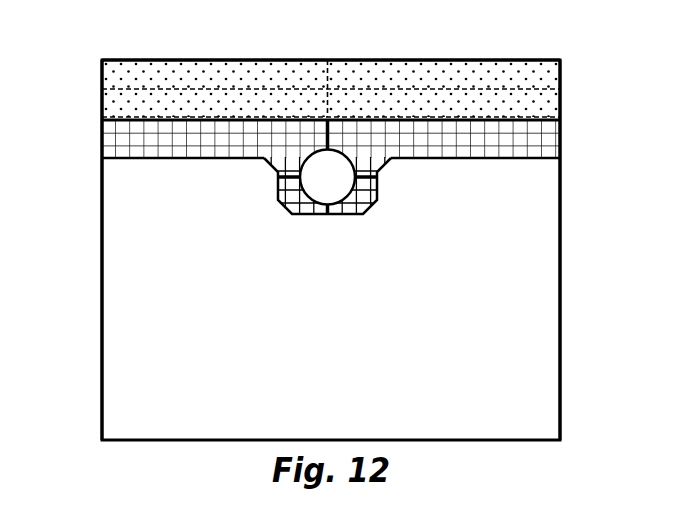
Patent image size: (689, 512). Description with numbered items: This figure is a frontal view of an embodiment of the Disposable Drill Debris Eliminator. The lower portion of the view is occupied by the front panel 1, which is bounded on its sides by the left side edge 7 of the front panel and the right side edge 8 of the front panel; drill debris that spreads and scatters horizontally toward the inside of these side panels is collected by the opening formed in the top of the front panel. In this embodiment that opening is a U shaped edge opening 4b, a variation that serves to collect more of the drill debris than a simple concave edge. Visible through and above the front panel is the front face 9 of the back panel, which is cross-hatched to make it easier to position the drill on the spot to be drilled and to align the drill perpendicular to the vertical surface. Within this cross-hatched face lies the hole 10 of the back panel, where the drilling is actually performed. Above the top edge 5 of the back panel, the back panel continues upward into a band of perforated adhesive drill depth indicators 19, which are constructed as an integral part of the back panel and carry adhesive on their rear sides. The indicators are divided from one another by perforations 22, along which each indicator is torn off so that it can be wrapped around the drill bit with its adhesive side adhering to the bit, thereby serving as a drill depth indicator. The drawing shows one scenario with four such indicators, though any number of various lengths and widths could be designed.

The front panel 1 is at (168, 372).
The top edge of the back panel 5 is at (155, 118).
The left side edge of the front panel 7 is at (101, 262).
The right side edge of the front panel 8 is at (561, 316).
The front face of the back panel 9 is at (218, 138).
The hole of the back panel 10 is at (335, 177).
The perforated adhesive drill depth indicators 19 is at (257, 108).
The perforations 22 is at (460, 88).
The U shaped edge opening 4b is at (378, 208).